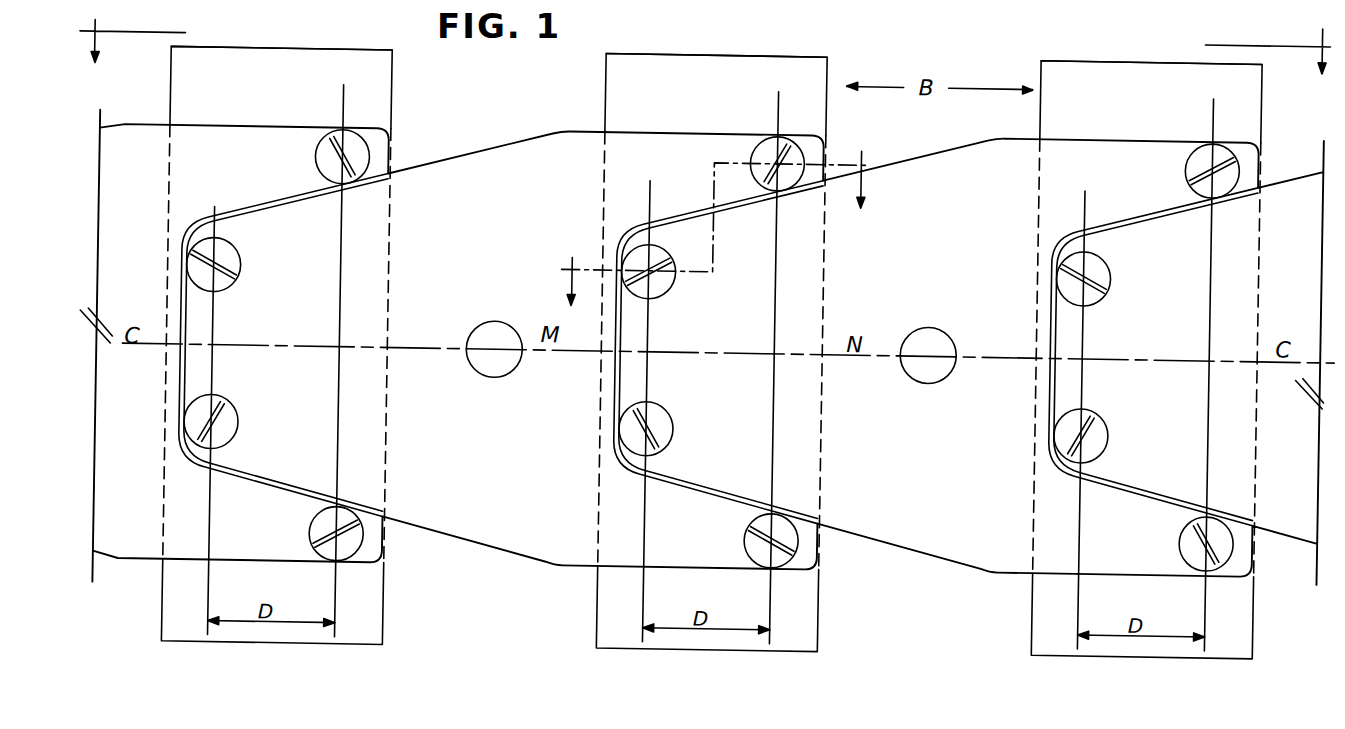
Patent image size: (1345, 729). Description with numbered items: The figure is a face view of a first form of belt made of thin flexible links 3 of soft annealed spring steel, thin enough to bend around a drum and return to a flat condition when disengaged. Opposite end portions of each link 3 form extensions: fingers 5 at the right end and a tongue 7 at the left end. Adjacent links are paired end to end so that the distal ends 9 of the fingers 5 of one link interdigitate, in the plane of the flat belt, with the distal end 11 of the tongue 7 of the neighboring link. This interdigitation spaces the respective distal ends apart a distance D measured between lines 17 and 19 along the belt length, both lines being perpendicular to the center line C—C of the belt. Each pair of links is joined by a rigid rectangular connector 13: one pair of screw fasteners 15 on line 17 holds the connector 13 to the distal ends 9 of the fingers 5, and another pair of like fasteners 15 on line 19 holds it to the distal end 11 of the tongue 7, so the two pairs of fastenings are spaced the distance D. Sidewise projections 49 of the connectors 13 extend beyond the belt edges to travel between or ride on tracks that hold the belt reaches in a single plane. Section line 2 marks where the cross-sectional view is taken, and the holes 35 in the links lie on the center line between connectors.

The section line 2- 2 is at (705, 41).
The link 3 is at (702, 353).
The fingers 5 is at (662, 344).
The tongue 7 is at (728, 340).
The distal ends of fingers 9 is at (1280, 537).
The distal end of tongue 11 is at (1068, 375).
The rigid connector 13 is at (1154, 93).
The screw fasteners 15 is at (692, 395).
The line 17 is at (1224, 625).
The line 19 is at (1088, 622).
The hole 35 is at (938, 392).
The sidewise projections 49 is at (1087, 662).